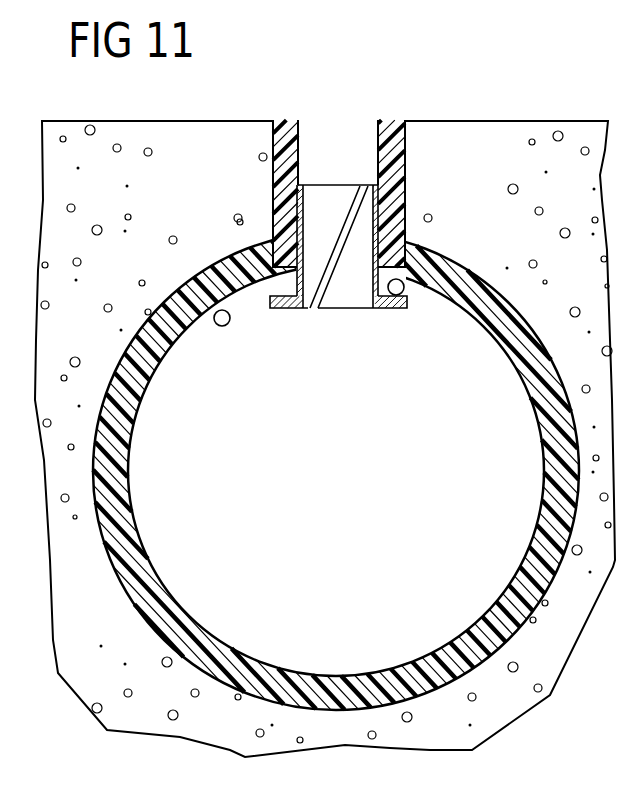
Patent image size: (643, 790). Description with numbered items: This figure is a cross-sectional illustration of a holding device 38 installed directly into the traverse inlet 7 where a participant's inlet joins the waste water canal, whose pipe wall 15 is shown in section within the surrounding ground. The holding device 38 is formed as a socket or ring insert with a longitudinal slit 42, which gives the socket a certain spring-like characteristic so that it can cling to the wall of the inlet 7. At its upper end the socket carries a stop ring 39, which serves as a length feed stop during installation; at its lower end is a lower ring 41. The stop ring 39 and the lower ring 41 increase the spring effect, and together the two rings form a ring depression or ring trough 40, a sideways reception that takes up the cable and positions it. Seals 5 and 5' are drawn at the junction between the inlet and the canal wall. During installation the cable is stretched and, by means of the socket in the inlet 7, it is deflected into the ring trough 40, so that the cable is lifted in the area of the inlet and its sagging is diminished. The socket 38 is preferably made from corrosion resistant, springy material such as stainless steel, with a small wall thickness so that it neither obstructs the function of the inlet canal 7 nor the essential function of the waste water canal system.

The traverse inlet 7 is at (334, 142).
The pipe 15 is at (516, 575).
The seal 5 is at (208, 358).
The seal 5' is at (419, 315).
The holding device 38 is at (381, 319).
The stop ring 39 is at (303, 271).
The ring trough 40 is at (284, 284).
The lower ring 41 is at (276, 304).
The longitudinal slit 42 is at (336, 275).